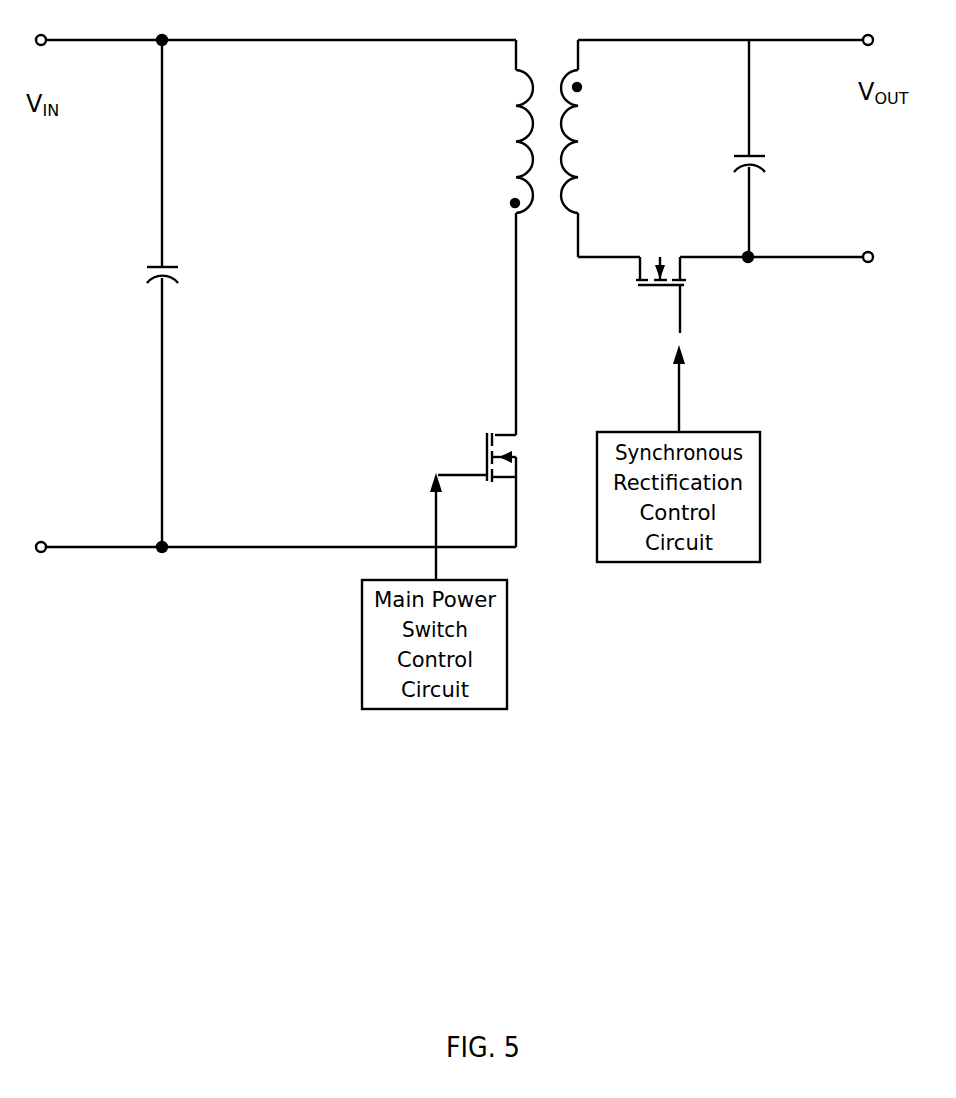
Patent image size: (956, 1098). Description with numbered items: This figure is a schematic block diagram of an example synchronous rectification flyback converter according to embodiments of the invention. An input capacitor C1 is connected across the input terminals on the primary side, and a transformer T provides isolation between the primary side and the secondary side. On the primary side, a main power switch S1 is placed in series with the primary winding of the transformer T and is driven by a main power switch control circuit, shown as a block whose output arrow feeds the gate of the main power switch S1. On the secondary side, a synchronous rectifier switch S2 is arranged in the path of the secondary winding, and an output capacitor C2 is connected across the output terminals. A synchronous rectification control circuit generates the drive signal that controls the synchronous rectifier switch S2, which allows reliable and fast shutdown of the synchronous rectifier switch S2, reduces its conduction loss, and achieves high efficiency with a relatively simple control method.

The input capacitor C1 is at (145, 293).
The output capacitor C2 is at (767, 148).
The transformer T is at (546, 126).
The main power switch S1 is at (477, 457).
The synchronous rectifier switch S2 is at (661, 295).